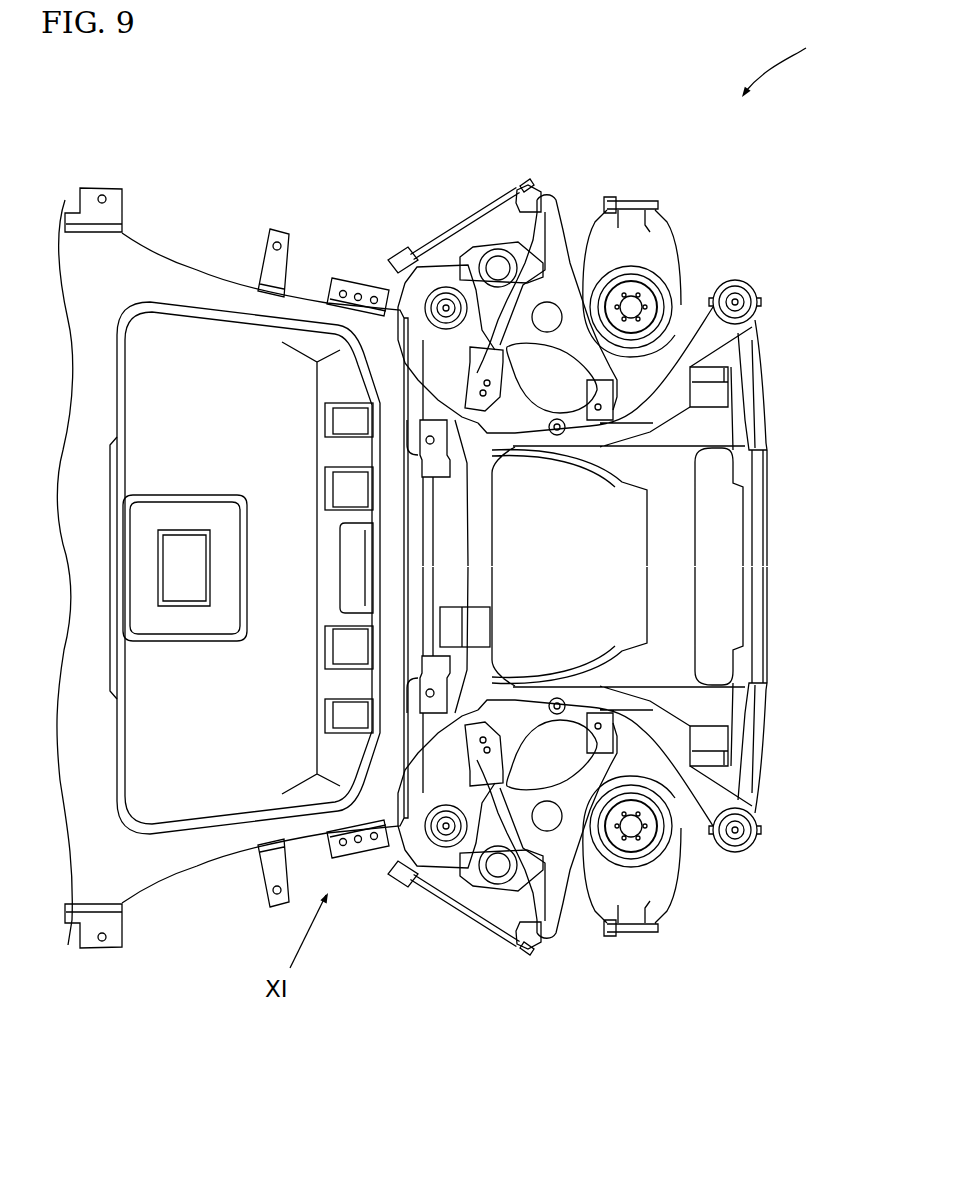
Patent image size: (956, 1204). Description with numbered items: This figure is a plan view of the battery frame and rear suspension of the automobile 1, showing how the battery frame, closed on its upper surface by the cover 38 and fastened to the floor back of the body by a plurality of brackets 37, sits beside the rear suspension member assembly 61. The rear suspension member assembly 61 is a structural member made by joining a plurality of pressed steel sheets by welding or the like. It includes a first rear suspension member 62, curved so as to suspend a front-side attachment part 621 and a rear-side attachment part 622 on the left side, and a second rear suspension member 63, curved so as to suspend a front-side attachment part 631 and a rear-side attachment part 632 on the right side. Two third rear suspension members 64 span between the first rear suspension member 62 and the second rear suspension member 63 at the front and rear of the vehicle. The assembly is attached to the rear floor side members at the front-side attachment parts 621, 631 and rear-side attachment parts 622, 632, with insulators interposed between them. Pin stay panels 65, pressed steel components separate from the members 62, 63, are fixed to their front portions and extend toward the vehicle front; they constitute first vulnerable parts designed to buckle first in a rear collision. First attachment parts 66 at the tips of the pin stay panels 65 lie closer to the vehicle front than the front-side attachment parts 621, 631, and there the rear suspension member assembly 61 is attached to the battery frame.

The automobile 1 is at (779, 59).
The brackets 37 is at (115, 187).
The cover 38 is at (88, 585).
The rear suspension member assembly 61 is at (770, 488).
The first rear suspension member 62 is at (640, 413).
The second rear suspension member 63 is at (640, 707).
The third rear suspension members 64 is at (675, 537).
The pin stay panels 65 is at (400, 250).
The first attachment parts 66 is at (356, 276).
The front-side attachment part 621 is at (440, 285).
The rear-side attachment part 622 is at (755, 288).
The front-side attachment part 631 is at (443, 850).
The rear-side attachment part 632 is at (760, 826).